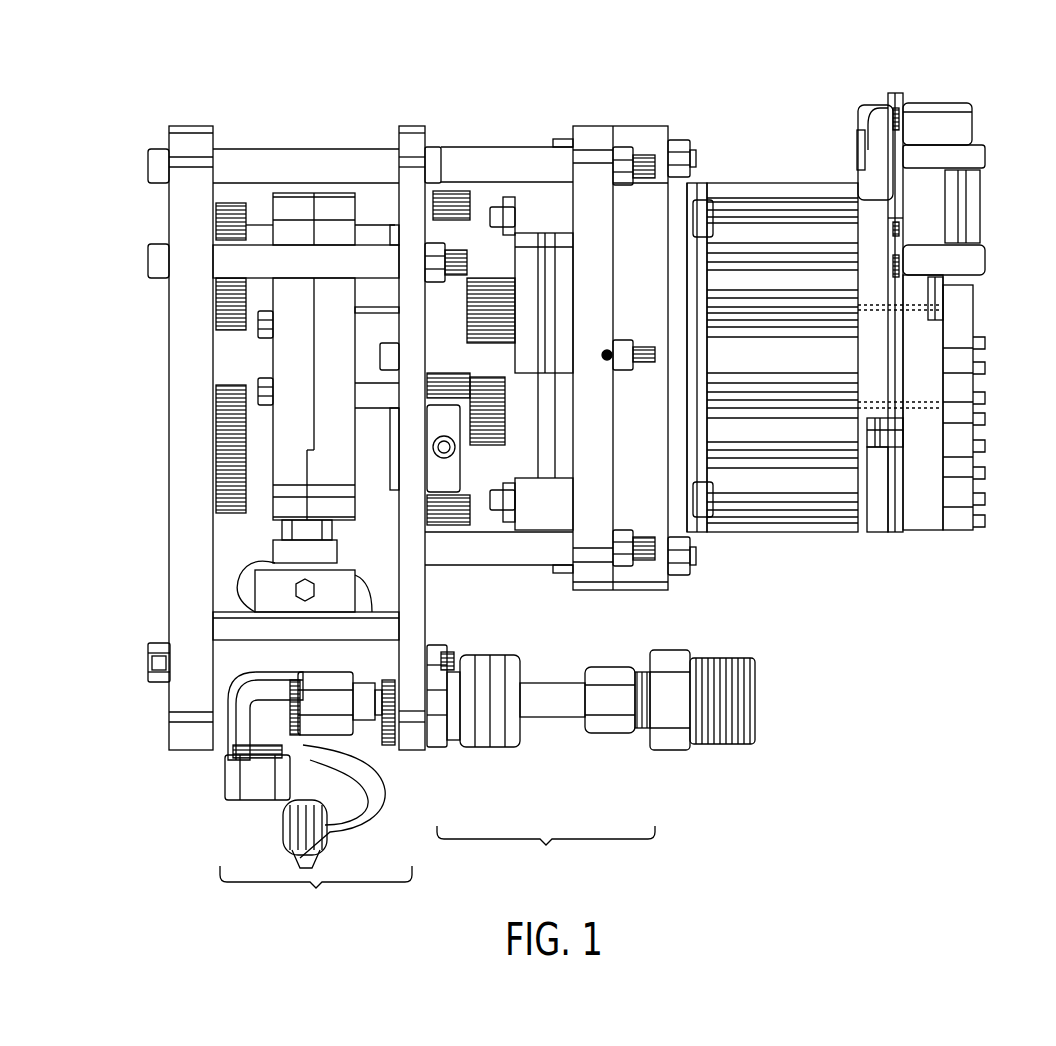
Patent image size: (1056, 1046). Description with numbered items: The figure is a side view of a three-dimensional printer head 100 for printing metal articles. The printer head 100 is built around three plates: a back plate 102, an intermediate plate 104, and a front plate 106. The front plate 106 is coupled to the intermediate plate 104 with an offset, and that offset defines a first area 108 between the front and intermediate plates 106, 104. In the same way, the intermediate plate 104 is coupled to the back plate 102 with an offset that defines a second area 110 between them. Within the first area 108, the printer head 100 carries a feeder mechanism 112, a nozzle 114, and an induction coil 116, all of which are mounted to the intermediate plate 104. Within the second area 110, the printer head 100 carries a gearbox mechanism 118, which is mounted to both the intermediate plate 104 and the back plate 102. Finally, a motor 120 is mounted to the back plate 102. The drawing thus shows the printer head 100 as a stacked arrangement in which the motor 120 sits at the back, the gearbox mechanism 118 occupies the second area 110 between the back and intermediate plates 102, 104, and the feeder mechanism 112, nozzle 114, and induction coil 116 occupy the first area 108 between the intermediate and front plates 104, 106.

The three-dimensional printer head 100 is at (110, 119).
The back plate 102 is at (601, 135).
The intermediate plate 104 is at (407, 135).
The front plate 106 is at (181, 135).
The first area 108 is at (315, 798).
The second area 110 is at (591, 765).
The feeder mechanism 112 is at (232, 358).
The nozzle 114 is at (290, 856).
The induction coil 116 is at (362, 800).
The gearbox mechanism 118 is at (525, 116).
The motor 120 is at (978, 135).